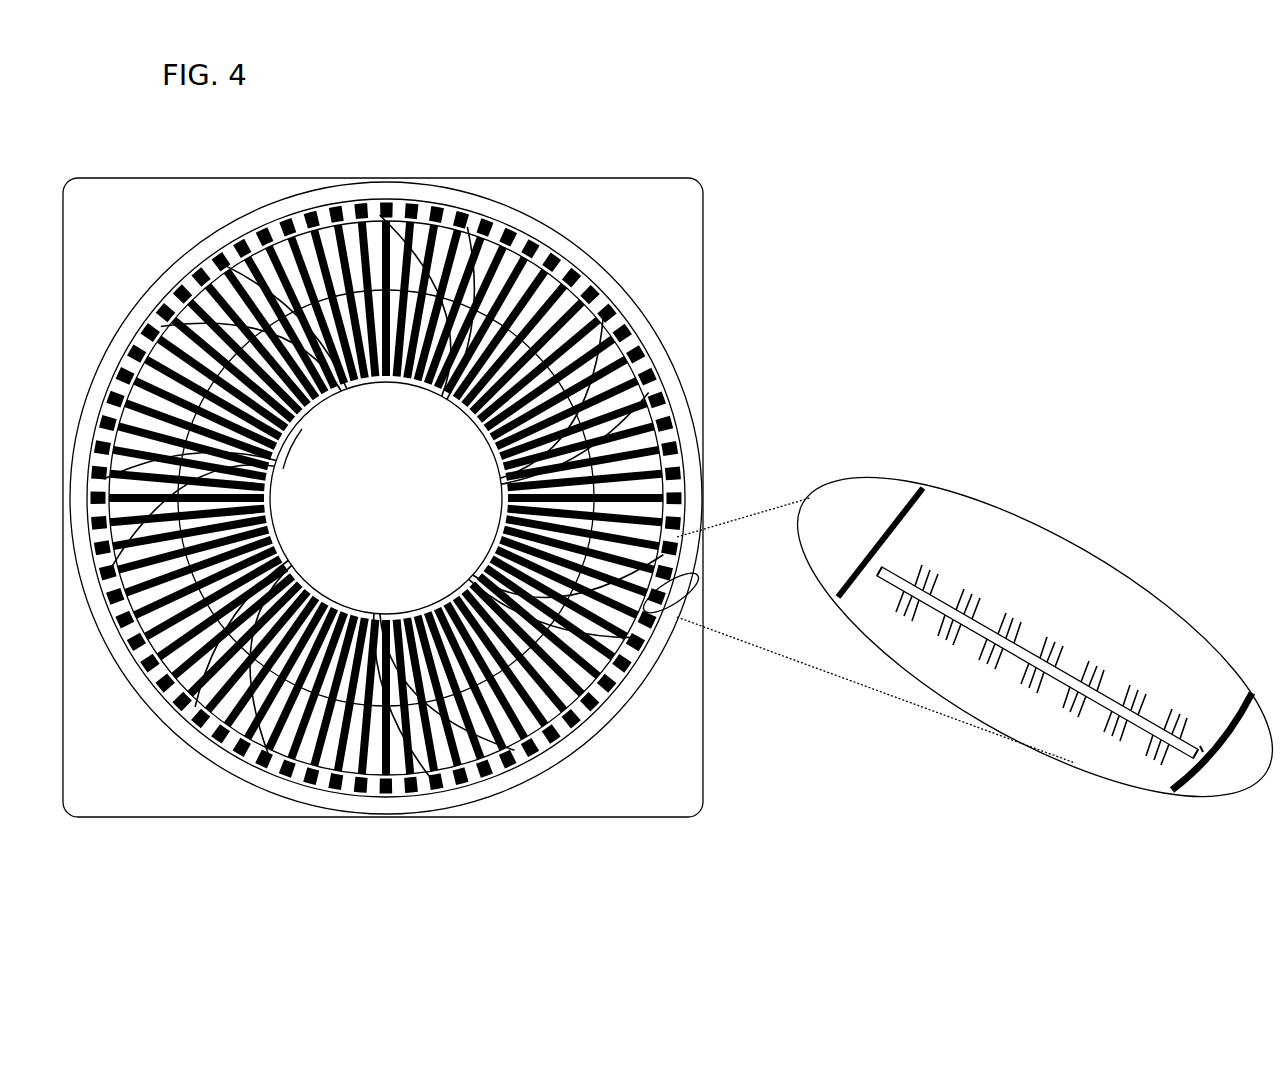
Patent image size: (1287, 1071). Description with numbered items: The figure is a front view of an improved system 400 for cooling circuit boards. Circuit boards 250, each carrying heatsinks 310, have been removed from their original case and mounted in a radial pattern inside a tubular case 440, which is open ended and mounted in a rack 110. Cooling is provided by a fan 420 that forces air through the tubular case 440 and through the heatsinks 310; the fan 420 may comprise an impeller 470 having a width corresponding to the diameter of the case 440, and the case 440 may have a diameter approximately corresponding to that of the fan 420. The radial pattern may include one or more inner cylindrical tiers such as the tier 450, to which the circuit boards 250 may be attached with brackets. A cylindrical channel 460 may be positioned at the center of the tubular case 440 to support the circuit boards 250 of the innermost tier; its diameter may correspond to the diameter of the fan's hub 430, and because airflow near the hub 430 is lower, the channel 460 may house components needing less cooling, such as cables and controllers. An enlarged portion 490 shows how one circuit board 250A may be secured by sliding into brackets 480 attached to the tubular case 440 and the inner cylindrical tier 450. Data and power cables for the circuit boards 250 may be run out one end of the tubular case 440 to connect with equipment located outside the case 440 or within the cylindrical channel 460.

The rack 110 is at (133, 818).
The circuit boards 250 is at (638, 345).
The circuit board 250A is at (890, 577).
The heatsinks 310 is at (613, 345).
The system for cooling circuit boards 400 is at (683, 142).
The fan 420 is at (582, 224).
The fan hub 430 is at (412, 509).
The tubular case 440 is at (482, 790).
The inner cylindrical tier 450 is at (418, 200).
The cylindrical channel 460 is at (290, 449).
The impeller 470 is at (347, 783).
The brackets 480 is at (903, 572).
The enlarged portion 490 is at (1137, 457).